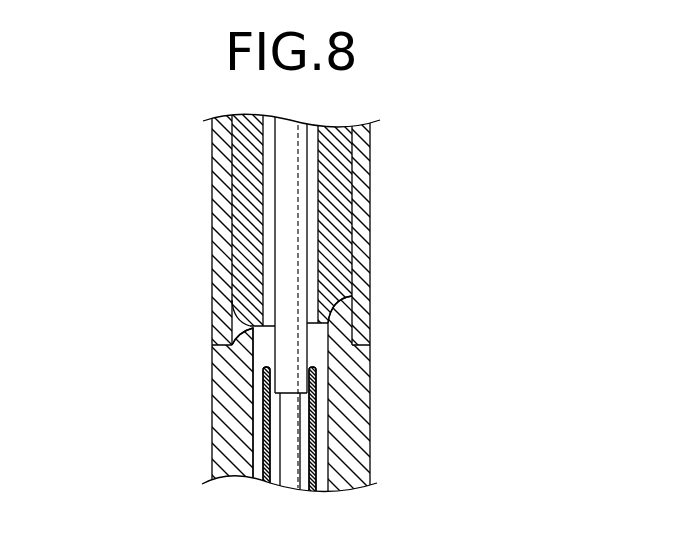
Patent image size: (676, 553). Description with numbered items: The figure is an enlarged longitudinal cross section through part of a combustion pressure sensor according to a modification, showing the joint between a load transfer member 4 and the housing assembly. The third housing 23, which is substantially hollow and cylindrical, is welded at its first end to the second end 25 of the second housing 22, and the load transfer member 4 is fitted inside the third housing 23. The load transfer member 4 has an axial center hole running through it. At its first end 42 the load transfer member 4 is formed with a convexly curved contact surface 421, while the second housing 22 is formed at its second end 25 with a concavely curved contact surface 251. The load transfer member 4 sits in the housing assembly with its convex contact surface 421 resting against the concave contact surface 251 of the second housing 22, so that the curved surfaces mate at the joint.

The load transfer member 4 is at (334, 208).
The second housing 22 is at (338, 445).
The third housing 23 is at (218, 255).
The second end 25 is at (338, 295).
The contact surface 251 is at (338, 295).
The first end 42 is at (233, 346).
The contact surface 421 is at (233, 346).